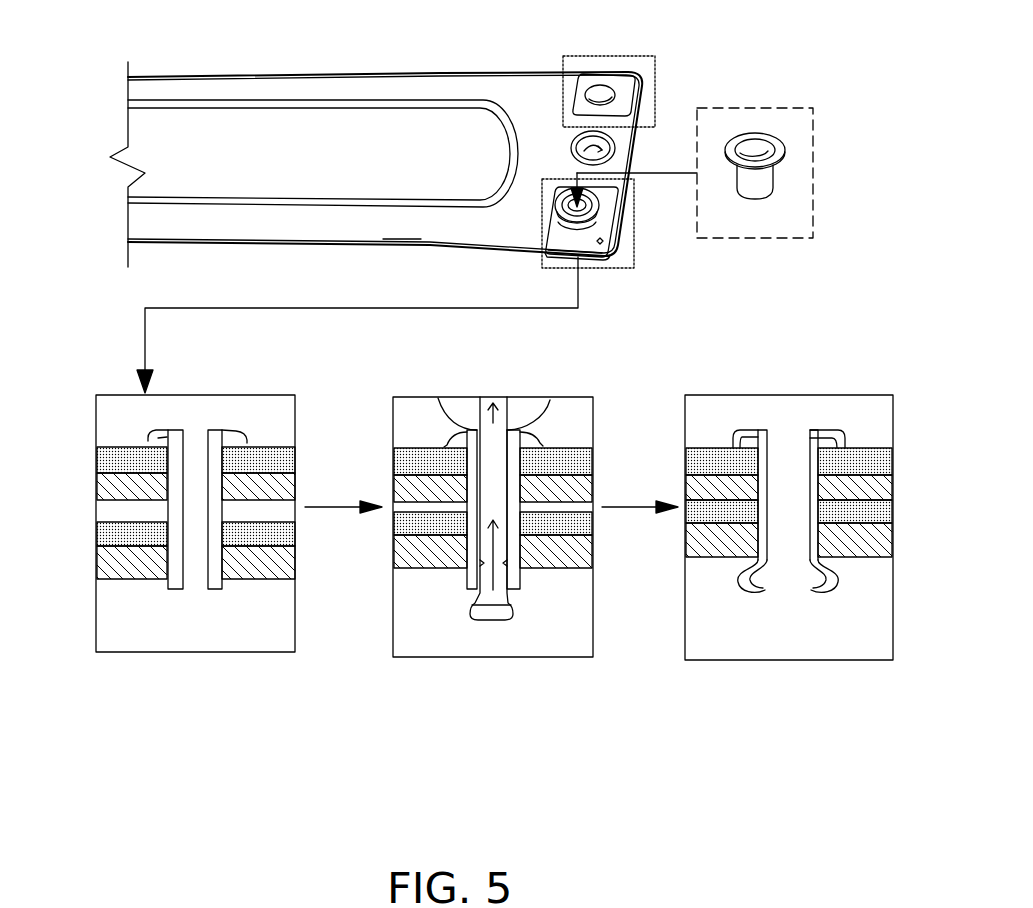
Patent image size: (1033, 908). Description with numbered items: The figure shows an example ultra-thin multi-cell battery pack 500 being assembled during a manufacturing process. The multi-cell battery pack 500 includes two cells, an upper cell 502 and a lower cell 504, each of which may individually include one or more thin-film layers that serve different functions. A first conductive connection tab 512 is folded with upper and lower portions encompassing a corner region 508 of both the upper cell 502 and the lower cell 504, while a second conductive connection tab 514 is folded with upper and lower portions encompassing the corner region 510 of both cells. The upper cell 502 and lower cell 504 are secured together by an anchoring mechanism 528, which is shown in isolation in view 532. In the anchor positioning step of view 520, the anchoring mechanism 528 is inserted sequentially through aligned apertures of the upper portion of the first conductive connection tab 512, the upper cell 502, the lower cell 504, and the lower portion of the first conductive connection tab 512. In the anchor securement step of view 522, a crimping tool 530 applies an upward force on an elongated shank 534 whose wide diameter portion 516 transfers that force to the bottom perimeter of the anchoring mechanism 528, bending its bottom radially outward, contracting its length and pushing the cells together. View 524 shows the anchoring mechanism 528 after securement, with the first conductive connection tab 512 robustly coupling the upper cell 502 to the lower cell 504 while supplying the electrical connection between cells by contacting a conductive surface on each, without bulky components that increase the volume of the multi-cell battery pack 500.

The multi-cell battery pack 500 is at (168, 35).
The upper cell 502 is at (707, 492).
The lower cell 504 is at (520, 253).
The corner region 508 is at (636, 262).
The corner region 510 is at (617, 56).
The first conductive connection tab 512 is at (625, 228).
The second conductive connection tab 514 is at (623, 88).
The wide diameter portion 516 is at (503, 612).
The view 520 is at (213, 643).
The view 522 is at (511, 643).
The view 524 is at (806, 641).
The anchoring mechanism 528 is at (777, 181).
The crimping tool 530 is at (550, 403).
The view 532 is at (797, 109).
The elongated shank 534 is at (495, 465).